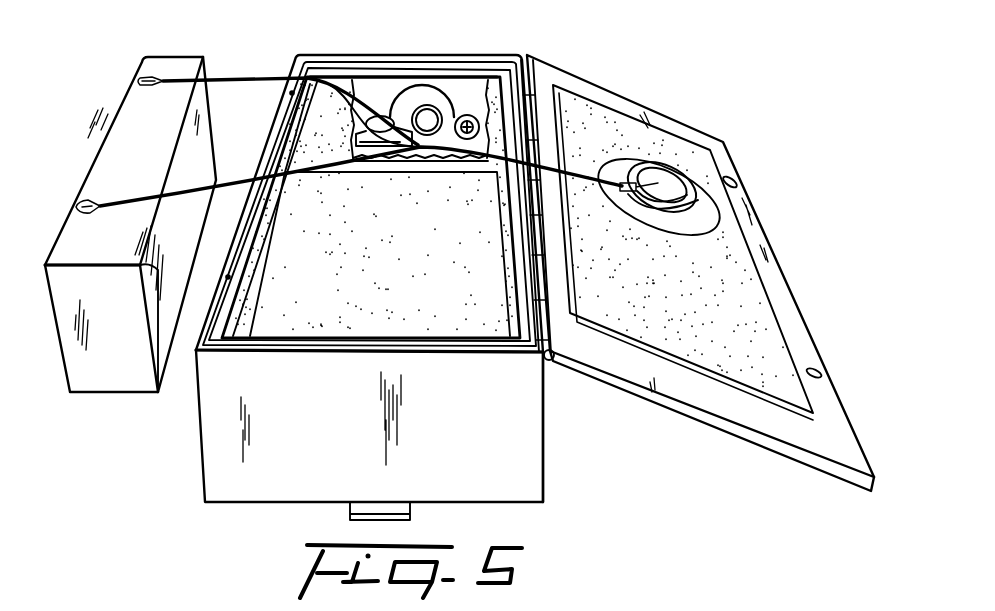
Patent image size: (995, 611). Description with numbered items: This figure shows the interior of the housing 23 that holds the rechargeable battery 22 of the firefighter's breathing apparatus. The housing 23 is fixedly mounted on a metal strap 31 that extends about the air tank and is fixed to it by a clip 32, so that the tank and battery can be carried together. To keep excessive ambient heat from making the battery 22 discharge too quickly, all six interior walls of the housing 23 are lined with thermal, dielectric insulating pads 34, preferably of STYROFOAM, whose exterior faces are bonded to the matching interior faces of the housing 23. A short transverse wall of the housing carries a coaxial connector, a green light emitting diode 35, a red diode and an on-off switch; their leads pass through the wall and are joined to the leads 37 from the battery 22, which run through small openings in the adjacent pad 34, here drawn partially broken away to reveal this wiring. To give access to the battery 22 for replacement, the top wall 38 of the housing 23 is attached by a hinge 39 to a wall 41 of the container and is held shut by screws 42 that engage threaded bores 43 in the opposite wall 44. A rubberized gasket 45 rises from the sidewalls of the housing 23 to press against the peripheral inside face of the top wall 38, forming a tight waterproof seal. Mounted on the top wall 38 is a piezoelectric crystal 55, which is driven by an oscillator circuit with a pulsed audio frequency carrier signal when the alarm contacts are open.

The battery 22 is at (117, 385).
The housing 23 is at (514, 457).
The metal strap 31 is at (490, 80).
The clip 32 is at (350, 514).
The thermal dielectric insulating pads 34 is at (352, 102).
The green light emitting diode 35 is at (427, 117).
The leads 37 is at (231, 76).
The top wall 38 is at (787, 283).
The hinge 39 is at (535, 73).
The wall 41 is at (544, 428).
The screws 42 is at (739, 181).
The threaded bores 43 is at (290, 93).
The wall 44 is at (273, 152).
The rubberized gasket 45 is at (458, 64).
The piezoelectric crystal 55 is at (668, 181).